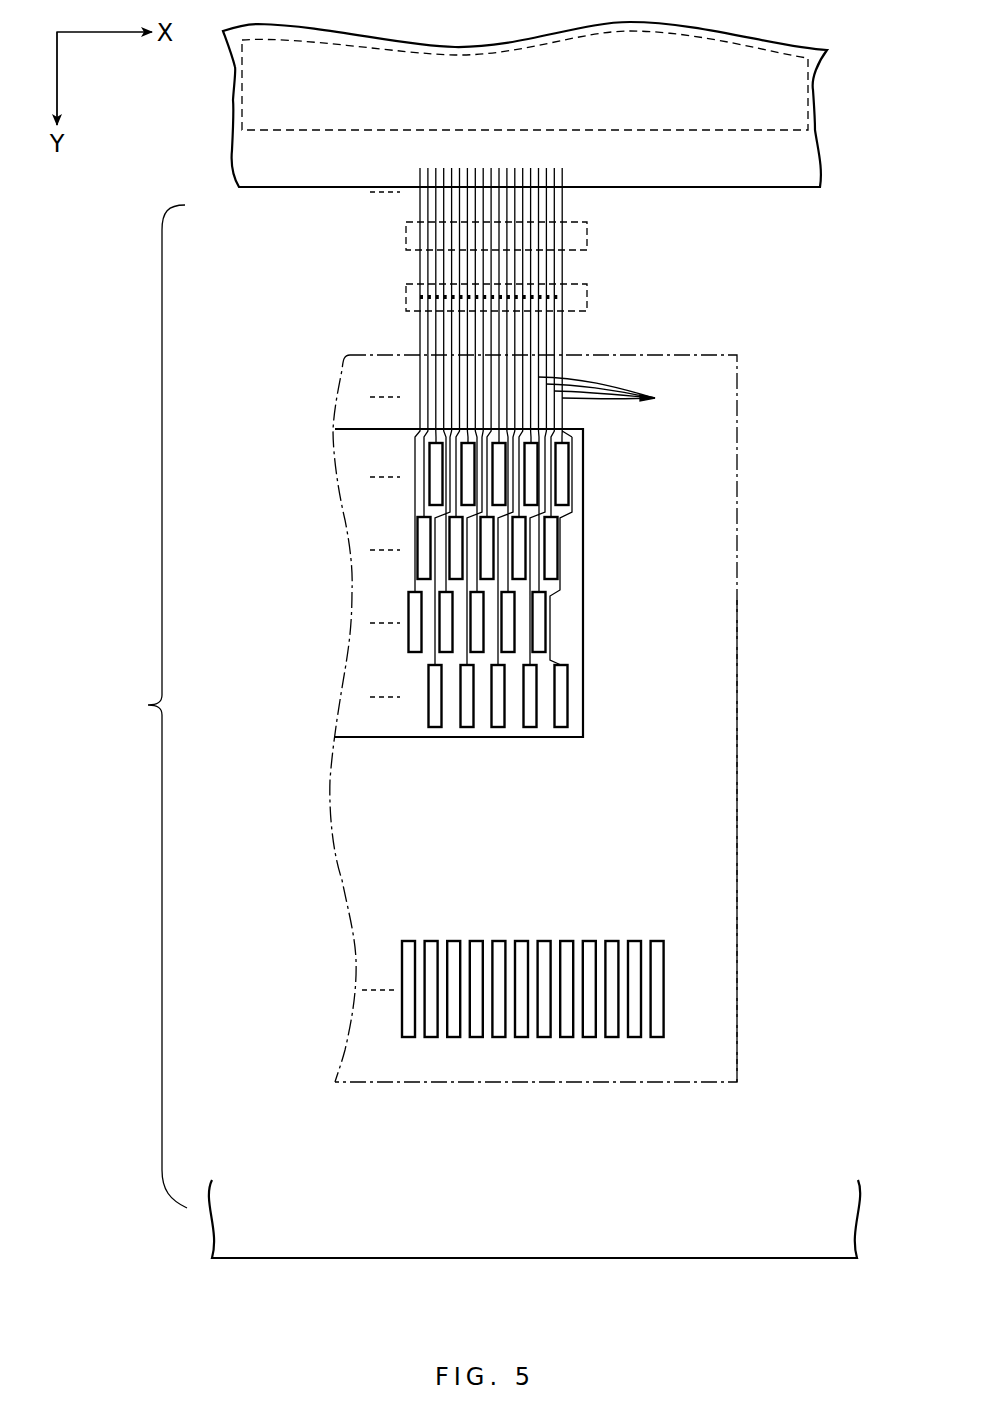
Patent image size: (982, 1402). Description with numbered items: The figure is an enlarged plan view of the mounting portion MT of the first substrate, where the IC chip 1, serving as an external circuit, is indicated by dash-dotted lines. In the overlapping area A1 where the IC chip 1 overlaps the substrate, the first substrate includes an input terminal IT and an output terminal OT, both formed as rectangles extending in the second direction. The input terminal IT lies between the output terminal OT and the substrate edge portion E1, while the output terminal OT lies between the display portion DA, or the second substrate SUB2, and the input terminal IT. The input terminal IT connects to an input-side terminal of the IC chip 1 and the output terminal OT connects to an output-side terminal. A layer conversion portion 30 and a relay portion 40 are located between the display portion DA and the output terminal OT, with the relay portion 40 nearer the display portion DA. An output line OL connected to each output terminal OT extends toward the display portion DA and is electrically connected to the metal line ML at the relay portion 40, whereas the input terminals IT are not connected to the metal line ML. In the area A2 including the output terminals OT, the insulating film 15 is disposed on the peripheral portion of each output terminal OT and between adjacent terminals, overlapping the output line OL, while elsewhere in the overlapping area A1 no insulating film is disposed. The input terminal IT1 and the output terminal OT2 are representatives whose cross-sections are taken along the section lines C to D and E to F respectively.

The IC chip 1 is at (737, 705).
The insulating film 15 is at (372, 660).
The layer conversion portion 30 is at (406, 297).
The relay portion 40 is at (406, 237).
The second substrate SUB2 is at (255, 165).
The display portion DA is at (822, 92).
The metal line ML is at (538, 193).
The output line OL is at (616, 395).
The output terminal OT is at (451, 585).
The output terminal OT2 is at (466, 487).
The input terminal IT is at (518, 1005).
The input terminal IT1 is at (431, 1040).
The mounting portion MT is at (121, 706).
The overlapping area A1 is at (708, 812).
The area A2 is at (388, 742).
The substrate edge portion E1 is at (585, 1262).
The section line point E is at (497, 473).
The section line point F is at (505, 474).
The section line point C is at (452, 990).
The section line point D is at (454, 991).